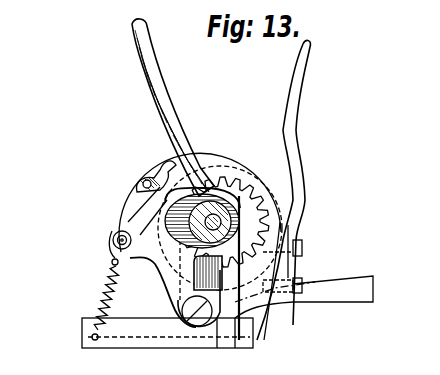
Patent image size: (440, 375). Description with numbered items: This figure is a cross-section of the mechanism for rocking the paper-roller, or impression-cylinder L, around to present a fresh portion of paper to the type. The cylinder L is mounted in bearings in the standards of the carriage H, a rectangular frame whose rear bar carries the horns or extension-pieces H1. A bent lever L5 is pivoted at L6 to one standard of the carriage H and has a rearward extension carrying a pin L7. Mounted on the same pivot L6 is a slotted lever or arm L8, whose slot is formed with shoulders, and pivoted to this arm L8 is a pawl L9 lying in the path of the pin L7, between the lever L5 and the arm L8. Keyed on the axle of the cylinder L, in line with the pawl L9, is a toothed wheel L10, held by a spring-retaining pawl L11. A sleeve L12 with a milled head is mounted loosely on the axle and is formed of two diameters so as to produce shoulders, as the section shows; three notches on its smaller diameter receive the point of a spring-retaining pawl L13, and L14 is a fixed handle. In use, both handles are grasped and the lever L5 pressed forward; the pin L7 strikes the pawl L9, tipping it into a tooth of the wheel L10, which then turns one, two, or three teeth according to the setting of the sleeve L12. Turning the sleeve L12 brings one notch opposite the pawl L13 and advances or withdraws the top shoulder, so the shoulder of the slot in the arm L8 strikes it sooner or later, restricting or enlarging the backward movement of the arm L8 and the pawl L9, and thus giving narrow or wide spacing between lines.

The carriage H is at (133, 348).
The horns H1 is at (304, 288).
The cylinder L is at (214, 165).
The bent lever L5 is at (168, 69).
The pivot L6 is at (197, 334).
The pin L7 is at (137, 181).
The slotted lever or arm L8 is at (150, 257).
The pawl L9 is at (130, 217).
The toothed wheel L10 is at (230, 178).
The spring-retaining pawl L11 is at (293, 270).
The sleeve L12 is at (114, 231).
The spring-retaining pawl L13 is at (255, 308).
The fixed handle L14 is at (308, 62).